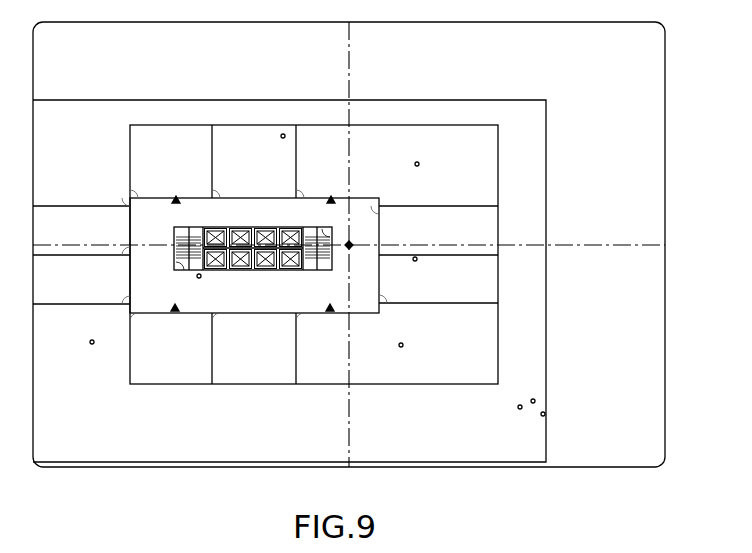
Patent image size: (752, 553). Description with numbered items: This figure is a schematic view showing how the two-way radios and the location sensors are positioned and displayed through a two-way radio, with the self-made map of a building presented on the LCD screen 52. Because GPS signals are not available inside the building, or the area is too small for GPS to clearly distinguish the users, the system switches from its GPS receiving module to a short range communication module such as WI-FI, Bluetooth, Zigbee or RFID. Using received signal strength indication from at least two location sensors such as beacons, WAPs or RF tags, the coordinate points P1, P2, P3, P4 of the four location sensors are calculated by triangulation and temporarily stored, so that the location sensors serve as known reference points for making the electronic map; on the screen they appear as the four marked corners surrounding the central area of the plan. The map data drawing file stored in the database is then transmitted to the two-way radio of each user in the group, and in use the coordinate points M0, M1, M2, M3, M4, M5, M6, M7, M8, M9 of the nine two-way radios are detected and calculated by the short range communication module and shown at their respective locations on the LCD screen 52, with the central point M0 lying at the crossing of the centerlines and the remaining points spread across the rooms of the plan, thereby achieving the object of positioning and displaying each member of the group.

The LCD screen 52 is at (666, 122).
The coordinate point M0 is at (350, 259).
The coordinate point M1 is at (417, 274).
The coordinate point M2 is at (418, 181).
The coordinate point M3 is at (285, 153).
The coordinate point M4 is at (400, 361).
The coordinate point M5 is at (199, 292).
The coordinate point M6 is at (92, 360).
The coordinate point M7 is at (504, 426).
The coordinate point M8 is at (533, 401).
The coordinate point M9 is at (543, 414).
The coordinate point of location sensor P1 is at (180, 321).
The coordinate point of location sensor P2 is at (339, 321).
The coordinate point of location sensor P3 is at (338, 211).
The coordinate point of location sensor P4 is at (180, 211).